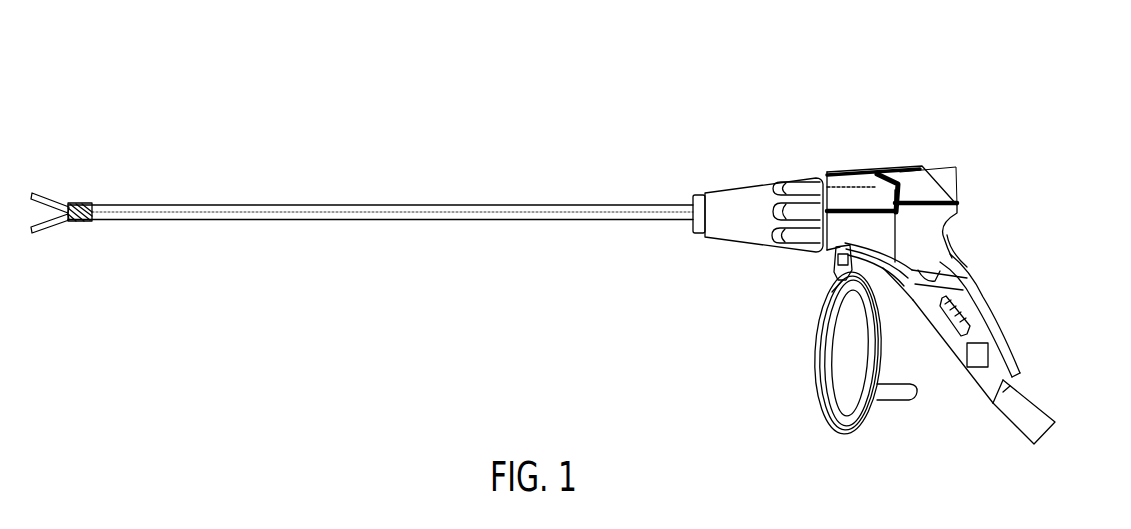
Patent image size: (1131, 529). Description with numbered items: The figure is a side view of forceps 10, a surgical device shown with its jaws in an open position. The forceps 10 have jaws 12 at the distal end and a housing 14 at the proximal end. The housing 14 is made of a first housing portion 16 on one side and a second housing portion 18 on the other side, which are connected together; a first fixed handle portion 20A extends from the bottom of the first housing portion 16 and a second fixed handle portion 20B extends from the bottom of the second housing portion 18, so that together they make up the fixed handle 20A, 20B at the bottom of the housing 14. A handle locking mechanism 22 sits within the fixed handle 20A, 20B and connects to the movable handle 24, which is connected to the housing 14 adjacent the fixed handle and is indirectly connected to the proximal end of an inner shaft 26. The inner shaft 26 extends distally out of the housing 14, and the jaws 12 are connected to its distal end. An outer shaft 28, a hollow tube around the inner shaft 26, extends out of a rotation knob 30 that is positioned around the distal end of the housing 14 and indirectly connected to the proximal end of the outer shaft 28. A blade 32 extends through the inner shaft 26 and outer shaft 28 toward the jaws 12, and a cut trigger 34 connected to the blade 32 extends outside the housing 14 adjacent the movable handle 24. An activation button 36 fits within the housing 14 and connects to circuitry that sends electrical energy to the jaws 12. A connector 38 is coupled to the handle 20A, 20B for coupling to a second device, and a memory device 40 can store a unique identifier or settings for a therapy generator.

The forceps 10 is at (122, 133).
The jaws 12 is at (50, 227).
The housing 14 is at (834, 164).
The first housing portion 16 is at (888, 170).
The second housing portion 18 is at (927, 237).
The first fixed handle portion 20A is at (1010, 333).
The second fixed handle portion 20B is at (982, 375).
The handle locking mechanism 22 is at (943, 333).
The movable handle 24 is at (842, 408).
The inner shaft 26 is at (233, 215).
The outer shaft 28 is at (305, 218).
The rotation knob 30 is at (740, 202).
The blade 32 is at (185, 218).
The cut trigger 34 is at (842, 273).
The activation button 36 is at (920, 185).
The connector 38 is at (1037, 400).
The memory device 40 is at (988, 355).